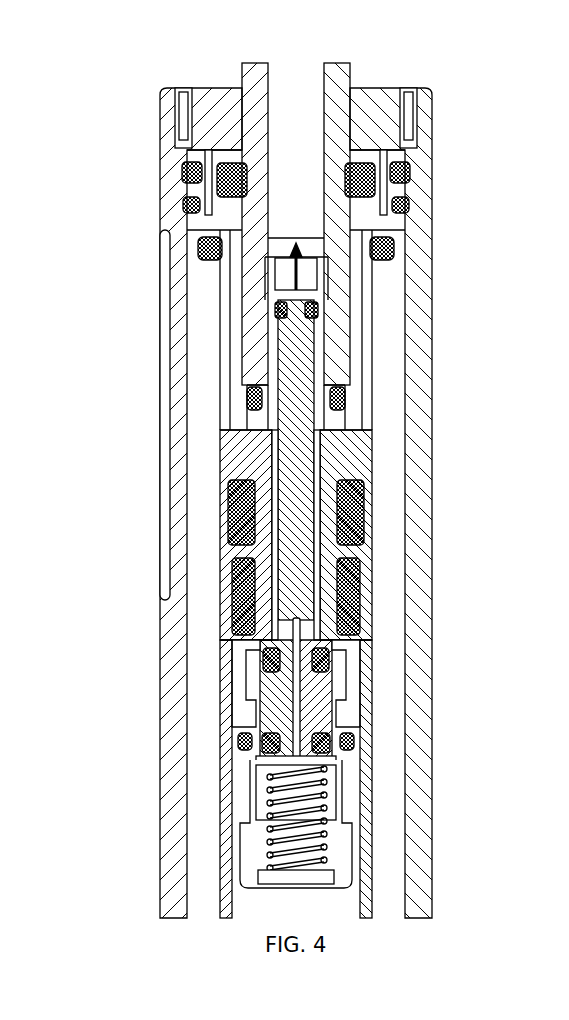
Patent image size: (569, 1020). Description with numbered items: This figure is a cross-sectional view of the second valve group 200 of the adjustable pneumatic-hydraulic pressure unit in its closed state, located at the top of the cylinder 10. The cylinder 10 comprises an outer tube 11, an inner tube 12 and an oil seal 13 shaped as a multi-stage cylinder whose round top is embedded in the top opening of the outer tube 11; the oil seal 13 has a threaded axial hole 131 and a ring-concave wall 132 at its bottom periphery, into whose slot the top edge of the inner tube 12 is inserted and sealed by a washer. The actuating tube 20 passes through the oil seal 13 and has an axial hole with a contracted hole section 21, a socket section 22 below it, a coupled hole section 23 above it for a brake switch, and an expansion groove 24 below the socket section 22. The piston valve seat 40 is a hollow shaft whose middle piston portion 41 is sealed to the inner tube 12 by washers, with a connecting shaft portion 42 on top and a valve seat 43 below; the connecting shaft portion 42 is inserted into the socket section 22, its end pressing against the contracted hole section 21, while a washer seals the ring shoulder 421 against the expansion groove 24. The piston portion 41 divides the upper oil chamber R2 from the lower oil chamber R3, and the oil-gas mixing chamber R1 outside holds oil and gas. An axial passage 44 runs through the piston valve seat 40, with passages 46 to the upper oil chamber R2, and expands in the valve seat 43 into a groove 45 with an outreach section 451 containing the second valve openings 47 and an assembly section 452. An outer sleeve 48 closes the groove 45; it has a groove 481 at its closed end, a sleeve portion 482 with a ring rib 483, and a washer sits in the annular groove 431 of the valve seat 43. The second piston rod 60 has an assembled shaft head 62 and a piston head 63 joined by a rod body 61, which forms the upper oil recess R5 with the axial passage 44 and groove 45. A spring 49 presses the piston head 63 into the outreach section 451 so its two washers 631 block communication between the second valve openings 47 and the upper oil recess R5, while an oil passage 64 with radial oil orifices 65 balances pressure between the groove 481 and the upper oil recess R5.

The cylinder 10 is at (150, 116).
The outer tube 11 is at (167, 157).
The inner tube 12 is at (220, 280).
The oil seal 13 is at (183, 98).
The axial hole 131 is at (187, 207).
The ring-concave wall 132 is at (205, 246).
The actuating tube 20 is at (357, 68).
The contracted hole section 21 is at (395, 218).
The socket section 22 is at (320, 312).
The coupled hole section 23 is at (352, 140).
The expansion groove 24 is at (250, 385).
The piston valve seat 40 is at (368, 552).
The piston portion 41 is at (350, 580).
The connecting shaft portion 42 is at (392, 255).
The ring shoulder 421 is at (250, 400).
The valve seat 43 is at (352, 648).
The annular groove 431 is at (250, 740).
The axial passage 44 is at (335, 612).
The groove 45 is at (513, 697).
The outreach section 451 is at (345, 692).
The assembly section 452 is at (350, 750).
The passage 46 is at (345, 430).
The second valve opening 47 is at (232, 690).
The outer sleeve 48 is at (245, 878).
The groove 481 is at (273, 876).
The sleeve portion 482 is at (258, 808).
The ring rib 483 is at (255, 745).
The spring 49 is at (327, 852).
The second piston rod 60 is at (283, 467).
The rod body 61 is at (232, 508).
The assembled shaft head 62 is at (280, 310).
The piston head 63 is at (272, 638).
The washer 631 is at (265, 655).
The oil passage 64 is at (288, 680).
The oil orifice 65 is at (240, 603).
The second valve group 200 is at (168, 582).
The oil-gas mixing chamber R1 is at (398, 400).
The upper oil chamber R2 is at (378, 382).
The lower oil chamber R3 is at (358, 902).
The upper oil recess R5 is at (328, 510).